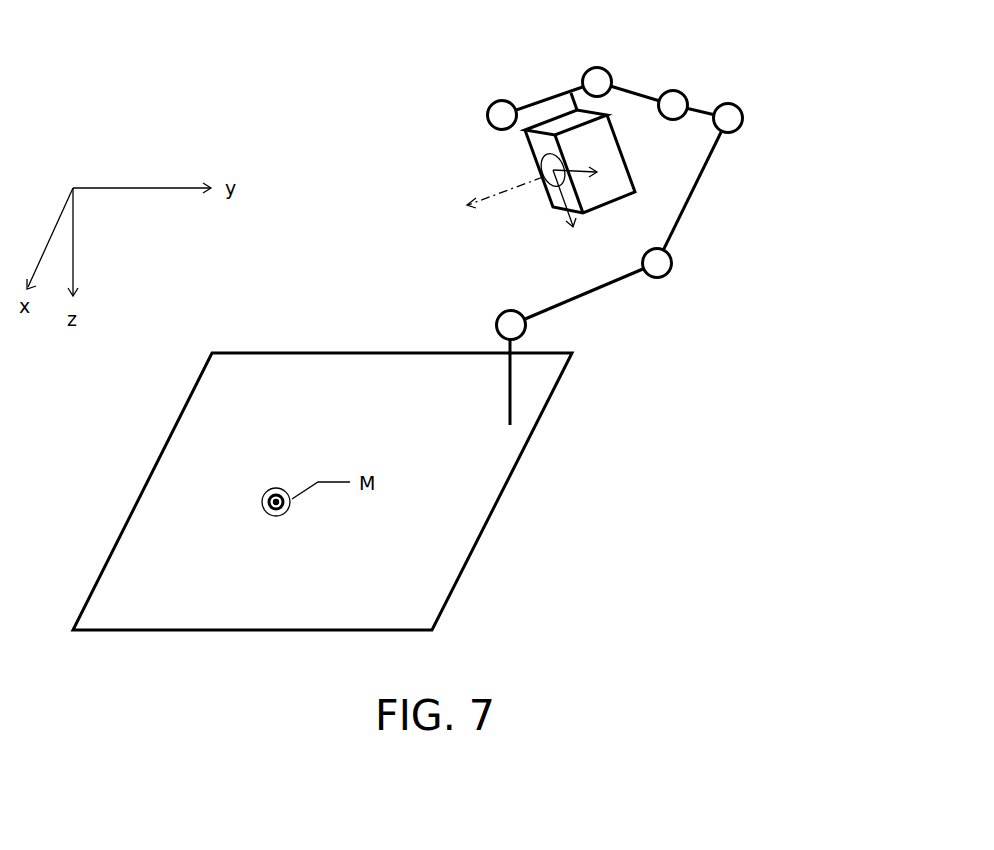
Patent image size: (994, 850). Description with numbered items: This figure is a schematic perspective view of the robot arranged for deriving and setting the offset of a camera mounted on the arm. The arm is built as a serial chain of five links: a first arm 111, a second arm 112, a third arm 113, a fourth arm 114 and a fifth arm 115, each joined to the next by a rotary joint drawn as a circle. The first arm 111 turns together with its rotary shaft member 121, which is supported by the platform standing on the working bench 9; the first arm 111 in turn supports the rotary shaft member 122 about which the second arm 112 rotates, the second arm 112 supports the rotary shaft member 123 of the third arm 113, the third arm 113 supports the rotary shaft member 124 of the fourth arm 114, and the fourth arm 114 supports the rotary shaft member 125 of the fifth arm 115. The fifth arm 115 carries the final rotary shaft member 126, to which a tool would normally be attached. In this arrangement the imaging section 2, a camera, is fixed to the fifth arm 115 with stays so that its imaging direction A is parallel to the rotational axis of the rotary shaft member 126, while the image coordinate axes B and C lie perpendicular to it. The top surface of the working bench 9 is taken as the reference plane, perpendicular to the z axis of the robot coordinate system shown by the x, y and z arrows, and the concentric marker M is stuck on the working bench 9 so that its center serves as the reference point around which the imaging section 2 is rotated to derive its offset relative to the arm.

The imaging section 2 is at (540, 170).
The working bench 9 is at (307, 491).
The first arm 111 is at (605, 296).
The second arm 112 is at (730, 190).
The third arm 113 is at (736, 97).
The fourth arm 114 is at (602, 58).
The fifth arm 115 is at (508, 90).
The rotary shaft member 121 is at (562, 345).
The rotary shaft member 122 is at (713, 279).
The rotary shaft member 123 is at (782, 138).
The rotary shaft member 124 is at (735, 79).
The rotary shaft member 125 is at (557, 69).
The rotary shaft member 126 is at (457, 107).